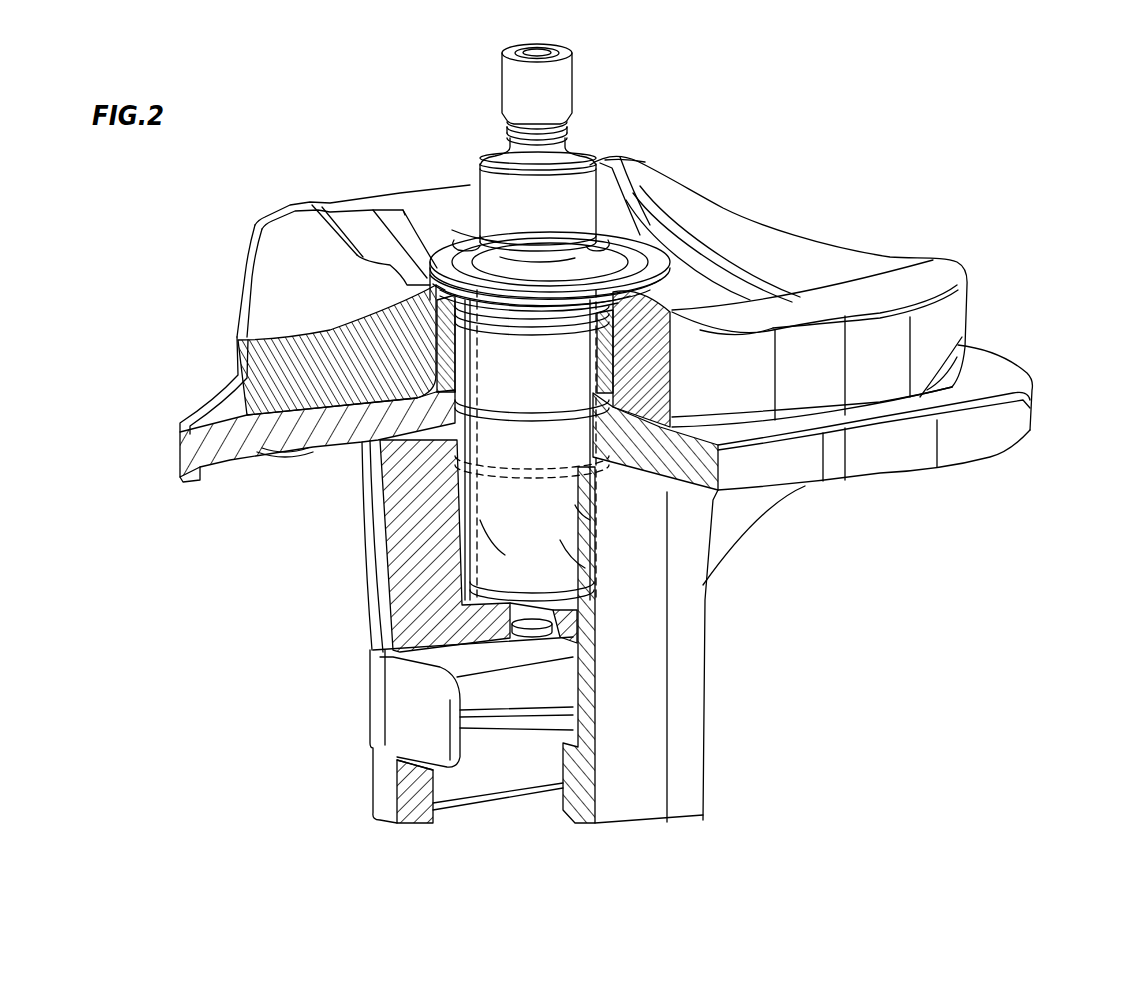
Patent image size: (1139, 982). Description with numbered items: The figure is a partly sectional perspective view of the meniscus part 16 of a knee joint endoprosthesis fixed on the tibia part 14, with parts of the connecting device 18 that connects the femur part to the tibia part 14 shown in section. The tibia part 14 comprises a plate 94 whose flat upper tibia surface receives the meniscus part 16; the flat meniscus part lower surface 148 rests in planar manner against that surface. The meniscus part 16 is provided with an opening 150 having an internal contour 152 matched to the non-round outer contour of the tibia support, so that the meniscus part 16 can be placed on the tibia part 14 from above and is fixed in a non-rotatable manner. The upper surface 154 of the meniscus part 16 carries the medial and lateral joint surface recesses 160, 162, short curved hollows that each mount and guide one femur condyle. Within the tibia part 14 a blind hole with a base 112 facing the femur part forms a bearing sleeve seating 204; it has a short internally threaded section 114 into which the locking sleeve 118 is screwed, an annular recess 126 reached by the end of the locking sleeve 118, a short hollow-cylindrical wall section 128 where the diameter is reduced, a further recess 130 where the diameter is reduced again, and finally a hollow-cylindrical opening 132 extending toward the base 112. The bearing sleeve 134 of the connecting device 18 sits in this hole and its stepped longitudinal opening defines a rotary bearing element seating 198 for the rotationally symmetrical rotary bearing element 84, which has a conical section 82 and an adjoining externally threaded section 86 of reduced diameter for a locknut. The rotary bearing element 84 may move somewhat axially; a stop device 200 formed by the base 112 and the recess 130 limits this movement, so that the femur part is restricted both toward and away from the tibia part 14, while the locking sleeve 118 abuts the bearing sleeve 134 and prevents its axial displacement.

The tibia part 14 is at (648, 432).
The meniscus part 16 is at (822, 291).
The connecting device 18 is at (530, 147).
The conical section 82 is at (568, 188).
The rotary bearing element 84 is at (476, 163).
The externally threaded section 86 is at (556, 88).
The plate 94 is at (222, 406).
The base 112 is at (580, 612).
The internally threaded section 114 is at (436, 347).
The locking sleeve 118 is at (443, 230).
The annular recess 126 is at (519, 445).
The hollow-cylindrical wall section 128 is at (462, 424).
The further recess 130 is at (598, 455).
The hollow-cylindrical opening 132 is at (478, 512).
The bearing sleeve 134 is at (505, 530).
The meniscus part lower surface 148 is at (287, 447).
The opening 150 is at (407, 290).
The internal contour 152 is at (622, 268).
The upper surface 154 is at (790, 257).
The medial joint surface recess 160 is at (740, 250).
The lateral joint surface recess 162 is at (315, 309).
The rotary bearing element seating 198 is at (380, 652).
The stop device 200 is at (552, 548).
The bearing sleeve seating 204 is at (580, 512).